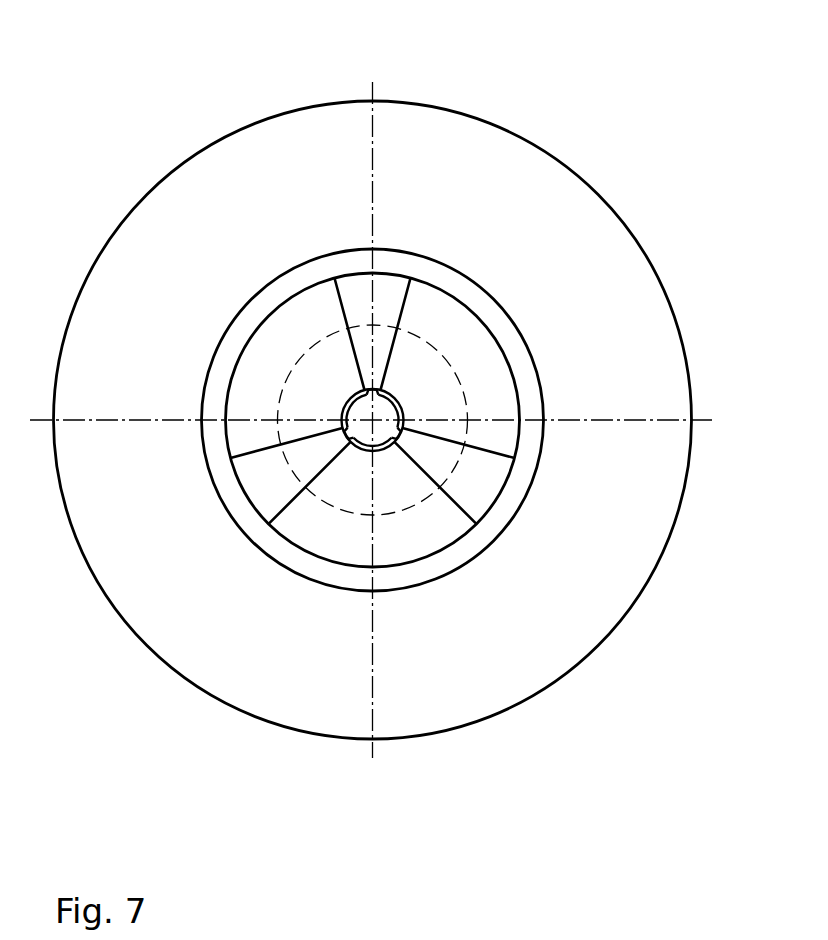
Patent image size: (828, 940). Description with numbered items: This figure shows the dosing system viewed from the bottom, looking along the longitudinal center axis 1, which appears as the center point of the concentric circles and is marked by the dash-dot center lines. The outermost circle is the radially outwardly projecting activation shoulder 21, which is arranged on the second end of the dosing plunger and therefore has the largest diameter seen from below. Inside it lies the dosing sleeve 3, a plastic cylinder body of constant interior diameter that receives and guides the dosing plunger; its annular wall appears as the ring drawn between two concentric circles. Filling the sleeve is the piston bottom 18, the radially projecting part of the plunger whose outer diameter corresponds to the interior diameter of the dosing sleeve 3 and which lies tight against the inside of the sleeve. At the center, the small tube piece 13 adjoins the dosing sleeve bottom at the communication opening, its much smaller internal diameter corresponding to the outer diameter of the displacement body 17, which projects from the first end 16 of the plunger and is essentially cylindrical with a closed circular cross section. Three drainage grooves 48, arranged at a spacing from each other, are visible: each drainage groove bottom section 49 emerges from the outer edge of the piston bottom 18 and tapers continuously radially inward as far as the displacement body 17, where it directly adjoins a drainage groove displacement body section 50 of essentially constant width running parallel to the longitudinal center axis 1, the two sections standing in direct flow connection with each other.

The longitudinal center axis 1 is at (383, 428).
The dosing sleeve 3 is at (214, 501).
The tube piece 13 is at (373, 420).
The first end 16 is at (384, 408).
The displacement body 17 is at (397, 434).
The piston bottom 18 is at (320, 302).
The activation shoulder 21 is at (398, 122).
The drainage groove 48 is at (363, 285).
The drainage groove bottom section 49 is at (263, 505).
The drainage groove displacement body section 50 is at (350, 438).